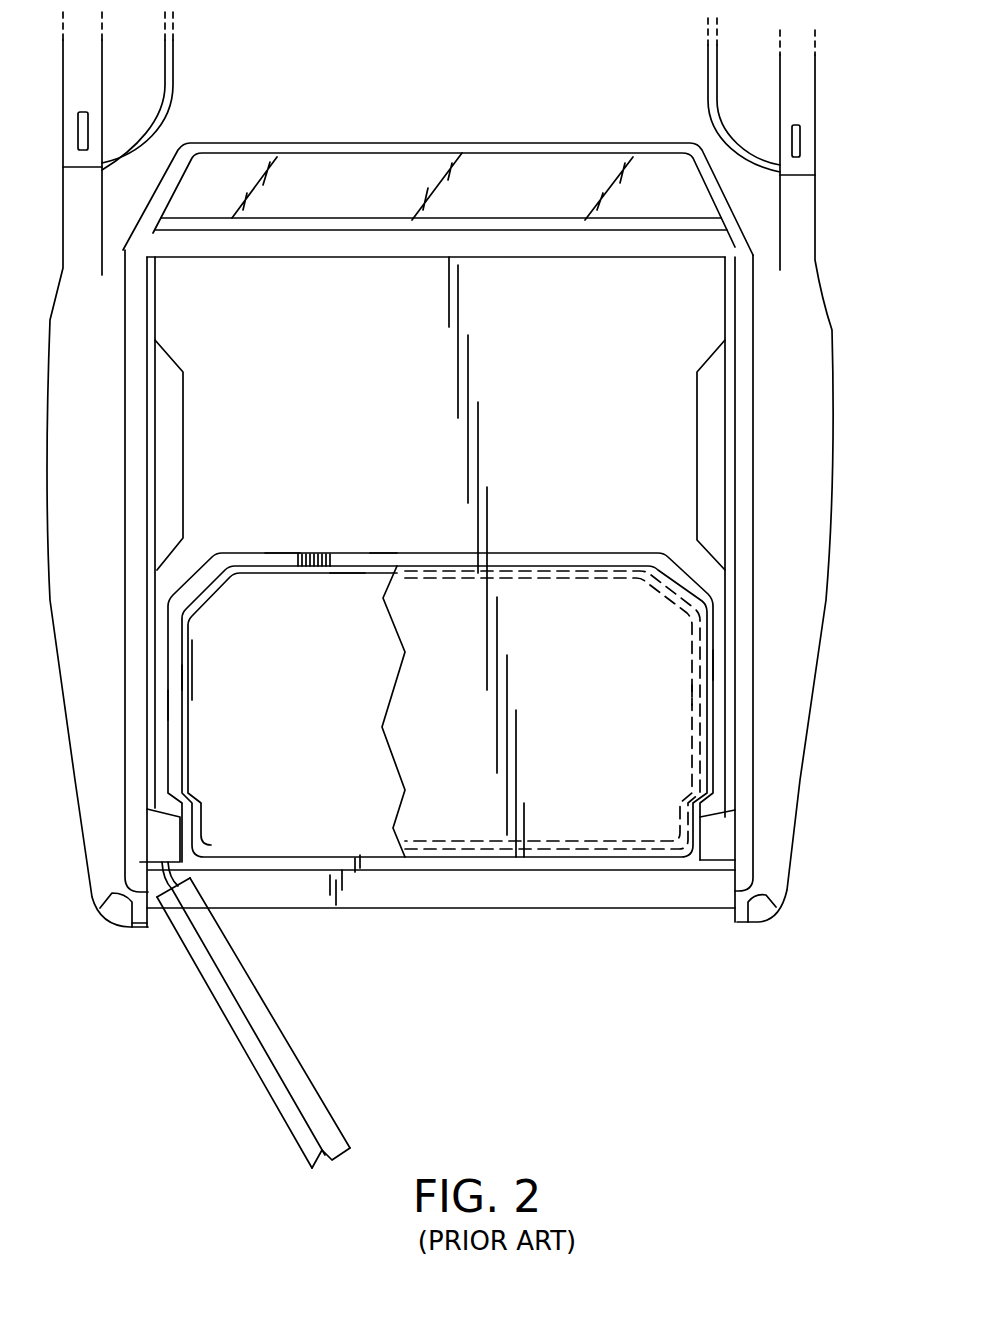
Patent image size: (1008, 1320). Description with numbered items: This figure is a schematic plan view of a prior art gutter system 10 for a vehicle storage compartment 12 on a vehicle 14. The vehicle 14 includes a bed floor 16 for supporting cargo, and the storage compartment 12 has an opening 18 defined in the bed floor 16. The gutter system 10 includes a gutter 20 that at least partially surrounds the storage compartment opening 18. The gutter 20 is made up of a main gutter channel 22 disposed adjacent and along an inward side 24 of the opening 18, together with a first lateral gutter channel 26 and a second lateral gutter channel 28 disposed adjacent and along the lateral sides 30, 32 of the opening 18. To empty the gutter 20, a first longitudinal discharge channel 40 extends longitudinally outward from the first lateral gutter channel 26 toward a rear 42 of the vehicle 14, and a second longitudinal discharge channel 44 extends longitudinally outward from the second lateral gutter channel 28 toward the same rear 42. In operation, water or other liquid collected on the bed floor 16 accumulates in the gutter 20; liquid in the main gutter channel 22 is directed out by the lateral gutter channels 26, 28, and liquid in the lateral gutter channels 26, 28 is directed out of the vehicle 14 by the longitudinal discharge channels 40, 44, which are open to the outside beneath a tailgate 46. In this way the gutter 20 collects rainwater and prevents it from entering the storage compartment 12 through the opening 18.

The gutter system 10 is at (353, 553).
The vehicle storage compartment 12 is at (335, 810).
The vehicle 14 is at (845, 243).
The bed floor 16 is at (537, 370).
The opening 18 is at (203, 642).
The gutter 20 is at (283, 553).
The main gutter channel 22 is at (383, 553).
The inward side 24 is at (347, 575).
The first lateral gutter channel 26 is at (173, 705).
The second lateral gutter channel 28 is at (712, 665).
The lateral side 30 is at (188, 677).
The lateral side 32 is at (690, 698).
The first longitudinal discharge channel 40 is at (187, 847).
The rear 42 is at (443, 872).
The second longitudinal discharge channel 44 is at (698, 858).
The tailgate 46 is at (312, 1100).